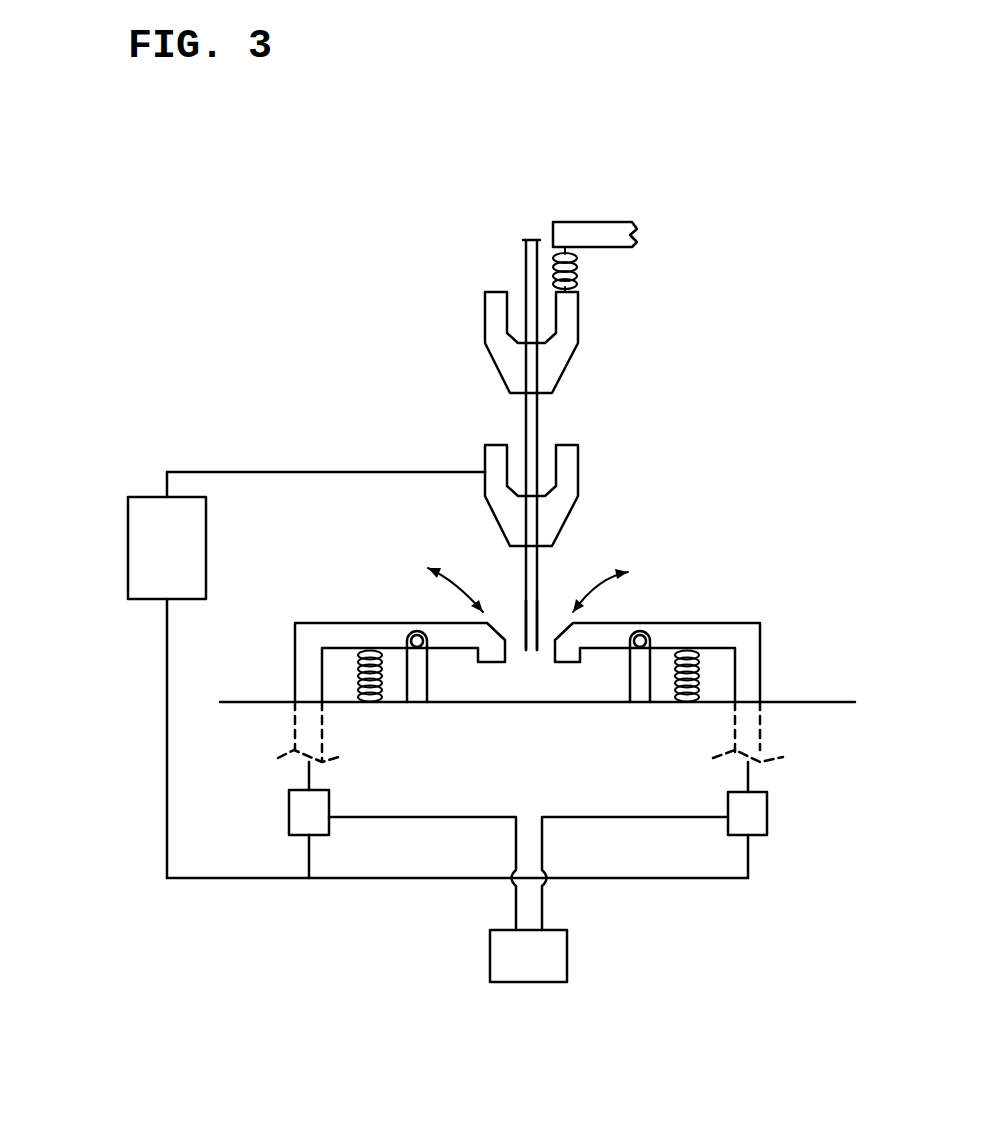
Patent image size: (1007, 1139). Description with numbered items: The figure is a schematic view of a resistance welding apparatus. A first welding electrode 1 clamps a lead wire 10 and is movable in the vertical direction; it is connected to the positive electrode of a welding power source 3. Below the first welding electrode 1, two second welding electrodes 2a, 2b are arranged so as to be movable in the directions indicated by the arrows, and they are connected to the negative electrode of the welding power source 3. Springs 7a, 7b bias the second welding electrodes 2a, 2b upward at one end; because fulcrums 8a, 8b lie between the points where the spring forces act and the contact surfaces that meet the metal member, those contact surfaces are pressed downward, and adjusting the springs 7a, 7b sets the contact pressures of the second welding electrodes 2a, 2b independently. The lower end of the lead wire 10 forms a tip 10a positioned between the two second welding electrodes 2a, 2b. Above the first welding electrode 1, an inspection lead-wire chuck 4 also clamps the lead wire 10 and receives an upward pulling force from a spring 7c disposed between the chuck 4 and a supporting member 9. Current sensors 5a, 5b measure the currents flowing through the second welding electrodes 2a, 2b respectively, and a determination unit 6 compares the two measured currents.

The first welding electrode 1 is at (492, 457).
The second welding electrode 2a is at (308, 637).
The second welding electrode 2b is at (748, 638).
The welding power source 3 is at (142, 547).
The inspection lead-wire chuck 4 is at (492, 323).
The current sensor 5a is at (303, 815).
The current sensor 5b is at (752, 817).
The determination unit 6 is at (528, 968).
The spring 7a is at (370, 704).
The spring 7b is at (690, 704).
The spring 7c is at (578, 278).
The fulcrum 8a is at (417, 635).
The fulcrum 8b is at (640, 635).
The supporting member 9 is at (592, 227).
The lead wire 10 is at (530, 433).
The wire tip 10a is at (545, 645).